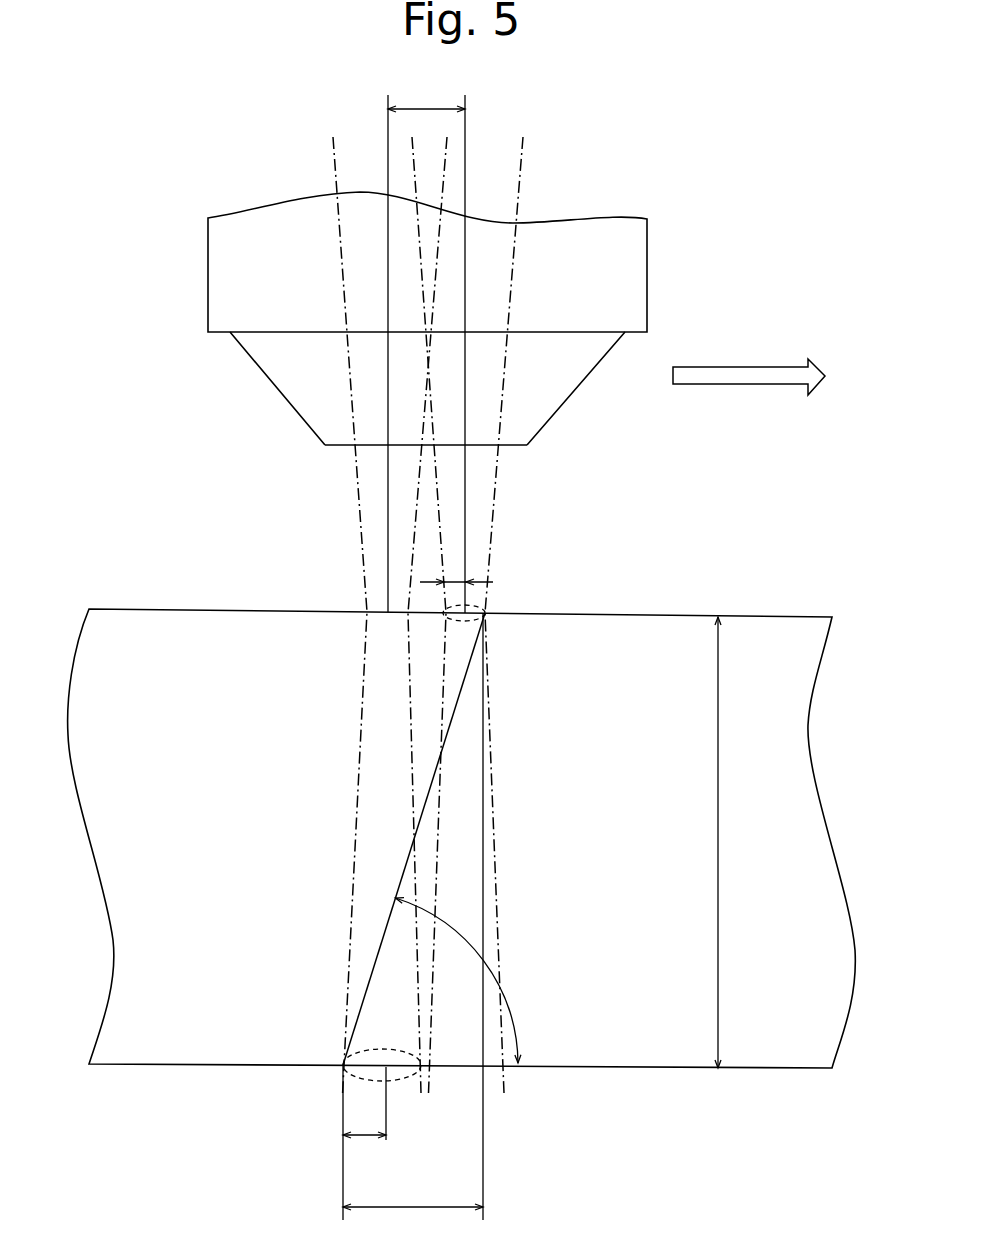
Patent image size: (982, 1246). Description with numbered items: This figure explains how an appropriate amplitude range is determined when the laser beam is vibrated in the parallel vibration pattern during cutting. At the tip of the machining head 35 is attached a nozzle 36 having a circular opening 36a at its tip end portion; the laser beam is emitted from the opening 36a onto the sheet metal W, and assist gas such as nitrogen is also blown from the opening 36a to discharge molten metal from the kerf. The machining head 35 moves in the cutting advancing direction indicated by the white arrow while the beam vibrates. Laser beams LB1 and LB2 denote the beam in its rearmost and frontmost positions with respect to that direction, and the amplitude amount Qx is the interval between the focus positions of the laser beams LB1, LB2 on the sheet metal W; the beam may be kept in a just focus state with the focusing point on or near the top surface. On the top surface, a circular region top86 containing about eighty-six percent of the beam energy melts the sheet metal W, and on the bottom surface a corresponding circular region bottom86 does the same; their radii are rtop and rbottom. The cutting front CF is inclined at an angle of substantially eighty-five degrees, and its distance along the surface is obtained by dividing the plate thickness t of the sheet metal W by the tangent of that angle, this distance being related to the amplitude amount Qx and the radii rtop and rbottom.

The machining head 35 is at (647, 273).
The nozzle 36 is at (570, 395).
The circular opening 36a is at (527, 445).
The laser beam LB1 is at (358, 503).
The laser beam LB2 is at (493, 505).
The sheet metal W is at (665, 615).
The cutting front CF is at (377, 950).
The circular region top 86 top86 is at (486, 622).
The circular region bottom 86 bottom86 is at (362, 1078).
The amplitude amount Qx is at (426, 348).
The radius of circular region top 86 rtop is at (456, 570).
The radius of circular region bottom 86 rbottom is at (386, 1116).
The plate thickness t is at (725, 842).